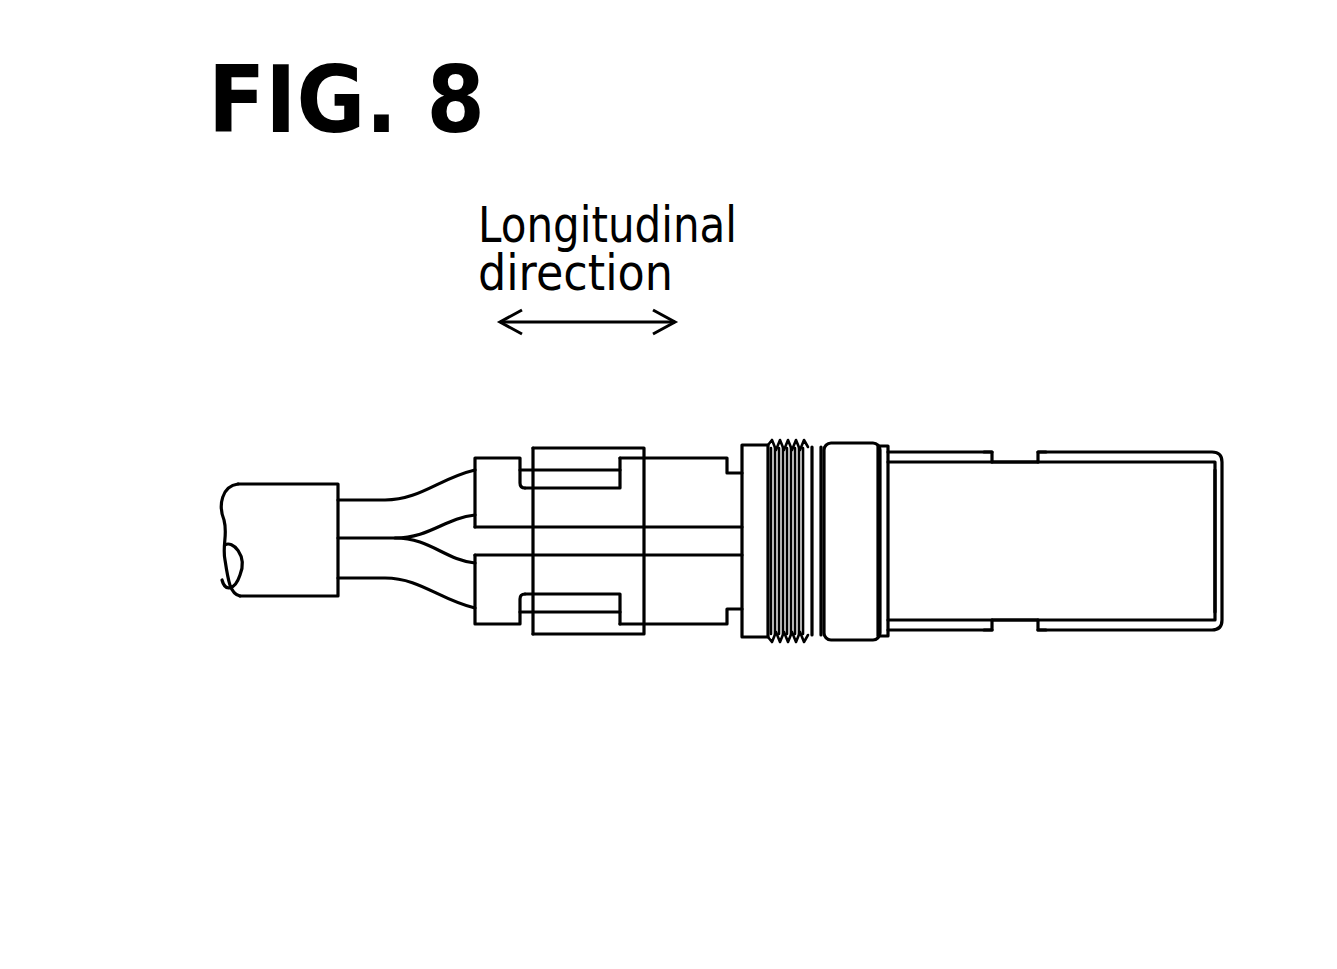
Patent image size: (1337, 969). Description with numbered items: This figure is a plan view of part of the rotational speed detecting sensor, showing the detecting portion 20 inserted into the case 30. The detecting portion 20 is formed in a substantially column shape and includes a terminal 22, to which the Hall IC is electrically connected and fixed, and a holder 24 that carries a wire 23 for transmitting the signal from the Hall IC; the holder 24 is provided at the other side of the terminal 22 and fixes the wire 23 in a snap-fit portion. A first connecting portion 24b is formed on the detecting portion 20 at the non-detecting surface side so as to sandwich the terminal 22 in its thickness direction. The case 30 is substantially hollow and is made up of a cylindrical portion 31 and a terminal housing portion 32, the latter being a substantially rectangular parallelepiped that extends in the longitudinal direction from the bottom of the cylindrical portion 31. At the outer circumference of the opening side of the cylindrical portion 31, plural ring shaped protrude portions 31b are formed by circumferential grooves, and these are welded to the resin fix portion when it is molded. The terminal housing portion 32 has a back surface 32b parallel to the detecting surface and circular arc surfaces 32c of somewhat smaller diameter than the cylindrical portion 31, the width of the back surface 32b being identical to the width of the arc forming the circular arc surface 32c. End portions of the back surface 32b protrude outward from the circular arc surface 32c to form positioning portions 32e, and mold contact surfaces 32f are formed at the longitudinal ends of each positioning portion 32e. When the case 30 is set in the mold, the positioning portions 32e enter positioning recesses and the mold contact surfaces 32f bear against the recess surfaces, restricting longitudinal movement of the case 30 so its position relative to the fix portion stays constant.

The detecting portion 20 is at (362, 494).
The wire 23 is at (428, 497).
The terminal 22 is at (498, 465).
The holder 24 is at (600, 458).
The first connecting portion 24b is at (690, 540).
The case 30 is at (928, 455).
The cylindrical portion 31 is at (849, 453).
The ring shaped protrude portion 31b is at (791, 447).
The terminal housing portion 32 is at (1222, 497).
The back surface 32b is at (1202, 552).
The circular arc surface 32c is at (1152, 452).
The positioning portion 32e is at (1013, 450).
The mold contact surface 32f is at (985, 455).